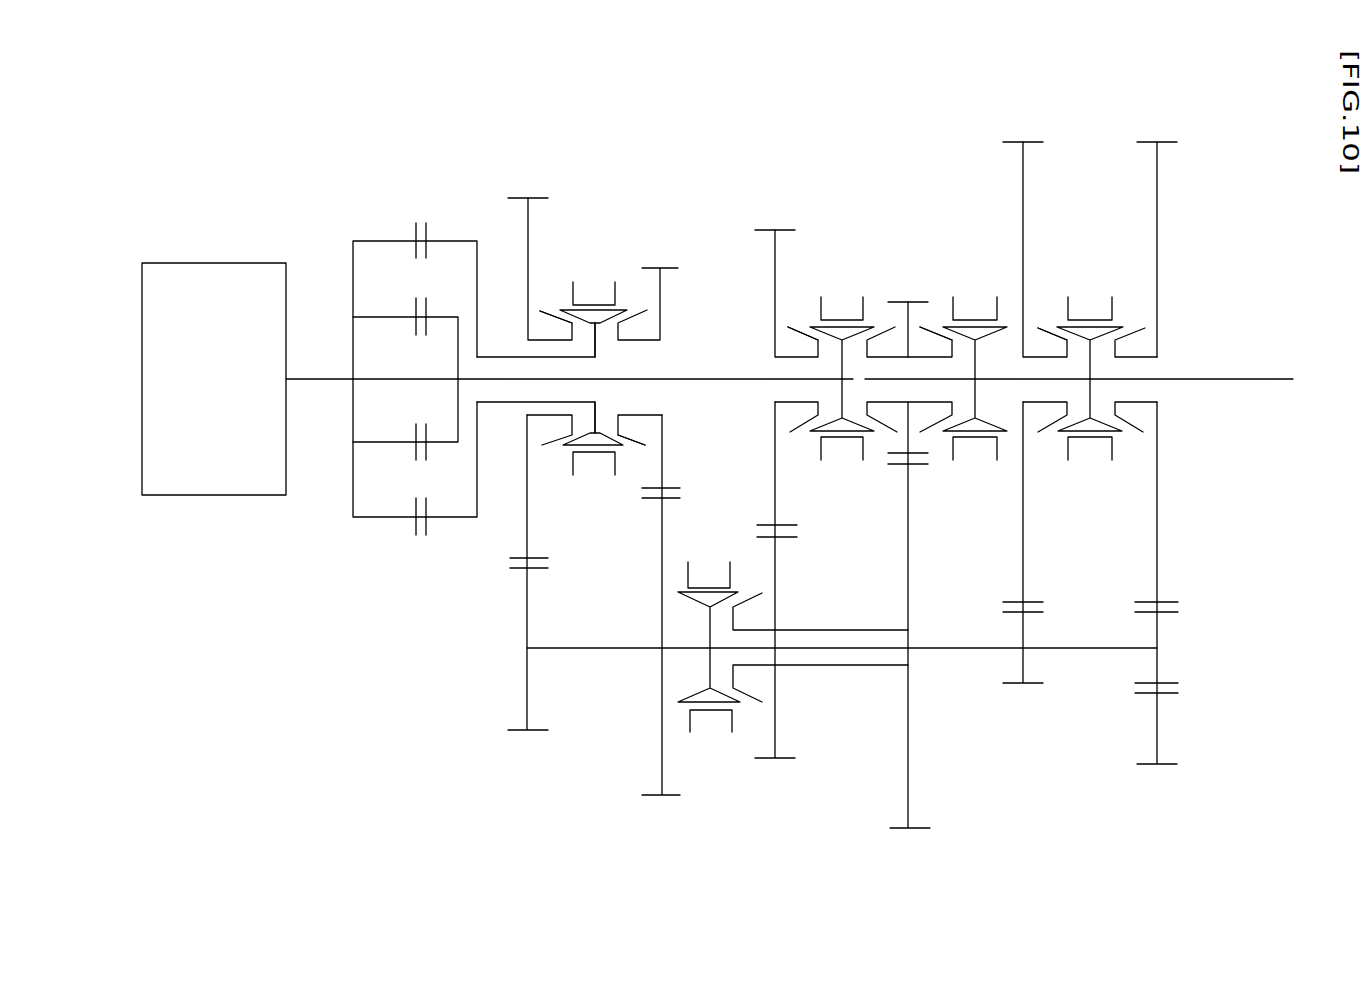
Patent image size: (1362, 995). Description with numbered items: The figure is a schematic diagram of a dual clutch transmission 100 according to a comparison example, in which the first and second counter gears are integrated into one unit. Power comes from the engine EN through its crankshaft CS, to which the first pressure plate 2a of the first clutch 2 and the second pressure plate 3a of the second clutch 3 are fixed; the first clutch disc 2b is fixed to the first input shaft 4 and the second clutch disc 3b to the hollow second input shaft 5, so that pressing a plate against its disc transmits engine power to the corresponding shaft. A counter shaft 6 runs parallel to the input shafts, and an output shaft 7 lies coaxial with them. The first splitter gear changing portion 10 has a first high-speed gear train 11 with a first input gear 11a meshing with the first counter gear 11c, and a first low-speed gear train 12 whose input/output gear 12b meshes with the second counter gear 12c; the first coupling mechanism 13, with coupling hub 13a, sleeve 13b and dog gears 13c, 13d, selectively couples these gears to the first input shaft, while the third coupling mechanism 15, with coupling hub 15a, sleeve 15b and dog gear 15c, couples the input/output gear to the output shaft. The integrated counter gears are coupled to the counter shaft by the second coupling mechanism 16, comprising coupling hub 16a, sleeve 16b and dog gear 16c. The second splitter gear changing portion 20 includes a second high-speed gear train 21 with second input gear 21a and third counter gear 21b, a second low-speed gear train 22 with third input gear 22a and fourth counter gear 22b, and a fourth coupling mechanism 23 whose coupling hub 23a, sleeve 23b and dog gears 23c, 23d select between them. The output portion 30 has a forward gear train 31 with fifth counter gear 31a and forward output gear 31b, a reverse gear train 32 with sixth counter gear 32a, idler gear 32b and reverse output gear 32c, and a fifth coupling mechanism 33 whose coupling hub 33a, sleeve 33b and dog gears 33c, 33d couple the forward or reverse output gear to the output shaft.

The dual clutch transmission 100 is at (1242, 207).
The engine EN is at (214, 379).
The crankshaft CS is at (332, 377).
The first clutch 2 is at (405, 379).
The first pressure plate 2a is at (416, 432).
The first clutch disc 2b is at (430, 432).
The second clutch 3 is at (424, 395).
The second pressure plate 3a is at (412, 525).
The second clutch disc 3b is at (433, 525).
The first input shaft 4 is at (718, 377).
The second input shaft 5 is at (508, 356).
The counter shaft 6 is at (598, 646).
The output shaft 7 is at (1205, 377).
The first splitter gear changing portion 10 is at (855, 180).
The first high-speed gear train 11 is at (794, 480).
The first input gear 11a is at (790, 228).
The first counter gear 11c is at (784, 760).
The first low-speed gear train 12 is at (926, 499).
The input/output gear 12b is at (916, 300).
The second counter gear 12c is at (914, 826).
The first coupling mechanism 13 is at (864, 349).
The coupling hub 13a is at (872, 320).
The sleeve 13b is at (850, 318).
The dog gear 13c is at (800, 328).
The dog gear 13d is at (885, 432).
The third coupling mechanism 15 is at (971, 330).
The coupling hub 15a is at (975, 316).
The sleeve 15b is at (988, 318).
The dog gear 15c is at (932, 322).
The second coupling mechanism 16 is at (786, 607).
The coupling hub 16a is at (702, 600).
The sleeve 16b is at (716, 586).
The dog gear 16c is at (757, 592).
The second splitter gear changing portion 20 is at (607, 176).
The second high-speed gear train 21 is at (522, 465).
The second input gear 21a is at (530, 197).
The third counter gear 21b is at (530, 732).
The second low-speed gear train 22 is at (667, 512).
The third input gear 22a is at (672, 266).
The fourth counter gear 22b is at (665, 797).
The fourth coupling mechanism 23 is at (593, 350).
The coupling hub 23a is at (628, 308).
The sleeve 23b is at (600, 300).
The dog gear 23c is at (556, 312).
The dog gear 23d is at (628, 447).
The output portion 30 is at (1077, 200).
The forward gear train 31 is at (1015, 417).
The fifth counter gear 31a is at (1030, 685).
The forward output gear 31b is at (1033, 141).
The reverse gear train 32 is at (1140, 460).
The sixth counter gear 32a is at (1152, 683).
The idler gear 32b is at (1160, 766).
The reverse output gear 32c is at (1168, 141).
The fifth coupling mechanism 33 is at (1092, 350).
The coupling hub 33a is at (1120, 322).
The sleeve 33b is at (1098, 318).
The dog gear 33c is at (1042, 328).
The dog gear 33d is at (1135, 432).